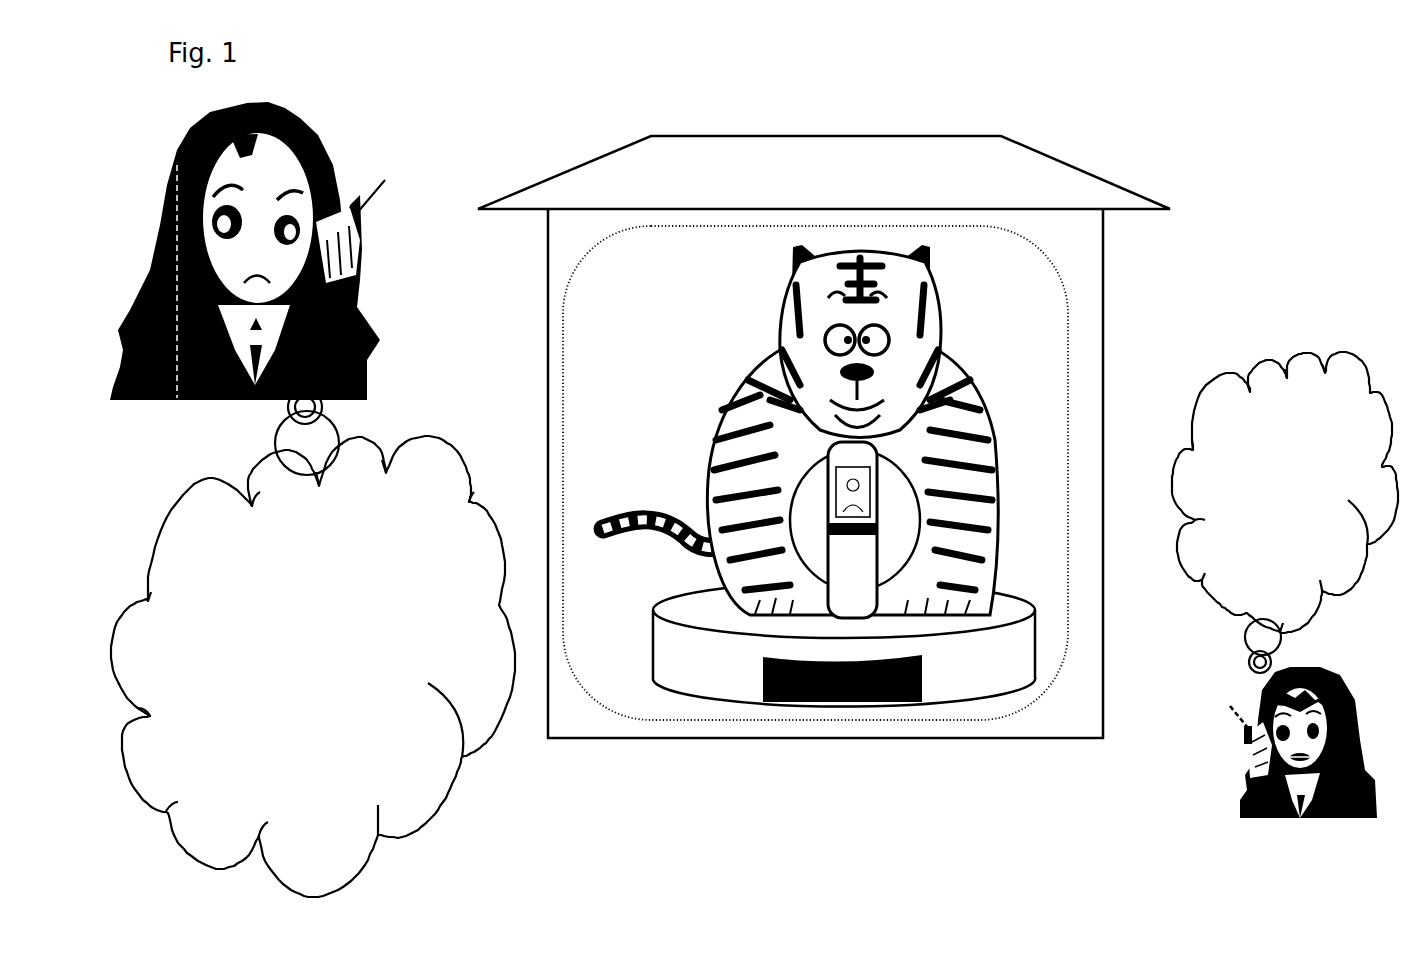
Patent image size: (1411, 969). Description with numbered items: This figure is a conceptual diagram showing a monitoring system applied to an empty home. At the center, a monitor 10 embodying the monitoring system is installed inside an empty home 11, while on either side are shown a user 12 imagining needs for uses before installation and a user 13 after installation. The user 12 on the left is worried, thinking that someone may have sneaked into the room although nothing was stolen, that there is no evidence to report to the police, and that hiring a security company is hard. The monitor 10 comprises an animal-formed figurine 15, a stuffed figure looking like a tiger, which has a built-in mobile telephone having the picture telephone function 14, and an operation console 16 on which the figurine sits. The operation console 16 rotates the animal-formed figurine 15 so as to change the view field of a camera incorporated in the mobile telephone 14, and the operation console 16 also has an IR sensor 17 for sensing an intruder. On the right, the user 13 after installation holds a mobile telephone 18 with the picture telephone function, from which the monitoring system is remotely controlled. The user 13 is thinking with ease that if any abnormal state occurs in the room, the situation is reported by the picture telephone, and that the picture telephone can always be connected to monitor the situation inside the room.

The monitor 10 is at (1102, 295).
The empty home 11 is at (1043, 168).
The user 12 is at (303, 128).
The user 13 is at (1237, 785).
The mobile telephone having the picture telephone function 14 is at (860, 597).
The animal-formed figurine 15 is at (776, 328).
The operation console 16 is at (684, 610).
The IR sensor 17 is at (813, 703).
The mobile telephone 18 is at (1248, 723).